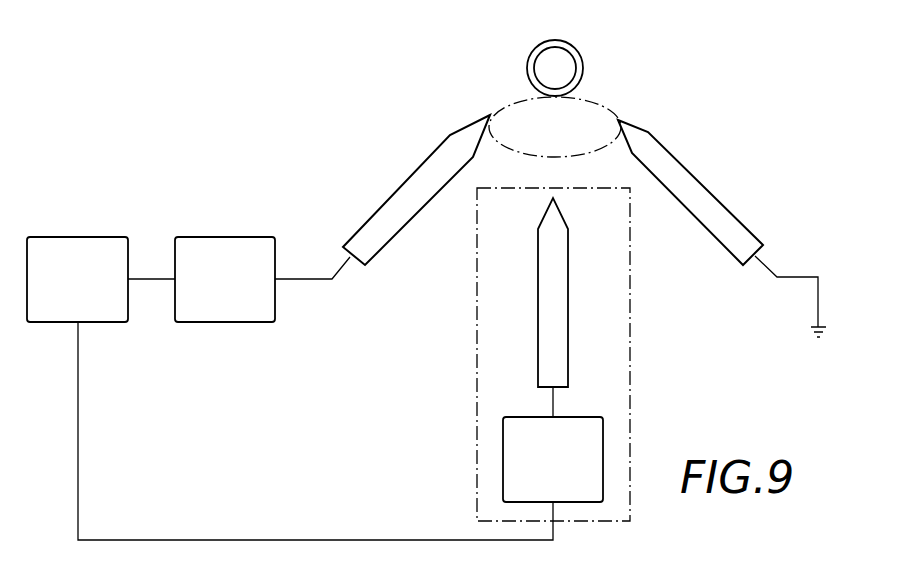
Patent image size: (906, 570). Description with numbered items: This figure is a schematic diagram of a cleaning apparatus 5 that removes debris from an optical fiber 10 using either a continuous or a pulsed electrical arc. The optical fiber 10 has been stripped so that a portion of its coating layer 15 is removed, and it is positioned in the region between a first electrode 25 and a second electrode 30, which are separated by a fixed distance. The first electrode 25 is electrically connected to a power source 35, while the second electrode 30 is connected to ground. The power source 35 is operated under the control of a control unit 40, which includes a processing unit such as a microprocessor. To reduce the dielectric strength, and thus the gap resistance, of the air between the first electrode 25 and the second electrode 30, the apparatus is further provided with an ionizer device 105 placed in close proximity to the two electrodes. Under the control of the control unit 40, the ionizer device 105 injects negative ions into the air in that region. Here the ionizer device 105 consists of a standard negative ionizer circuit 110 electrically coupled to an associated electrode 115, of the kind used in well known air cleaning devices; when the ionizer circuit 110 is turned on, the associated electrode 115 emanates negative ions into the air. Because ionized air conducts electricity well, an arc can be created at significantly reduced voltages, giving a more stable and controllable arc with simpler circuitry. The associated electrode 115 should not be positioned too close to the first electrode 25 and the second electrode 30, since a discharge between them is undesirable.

The cleaning apparatus 5 is at (638, 107).
The optical fiber 10 is at (532, 55).
The coating layer 15 is at (575, 52).
The first electrode 25 is at (410, 186).
The second electrode 30 is at (686, 164).
The power source 35 is at (213, 237).
The control unit 40 is at (82, 237).
The ionizer device 105 is at (477, 297).
The ionizer circuit 110 is at (520, 417).
The associated electrode 115 is at (568, 325).